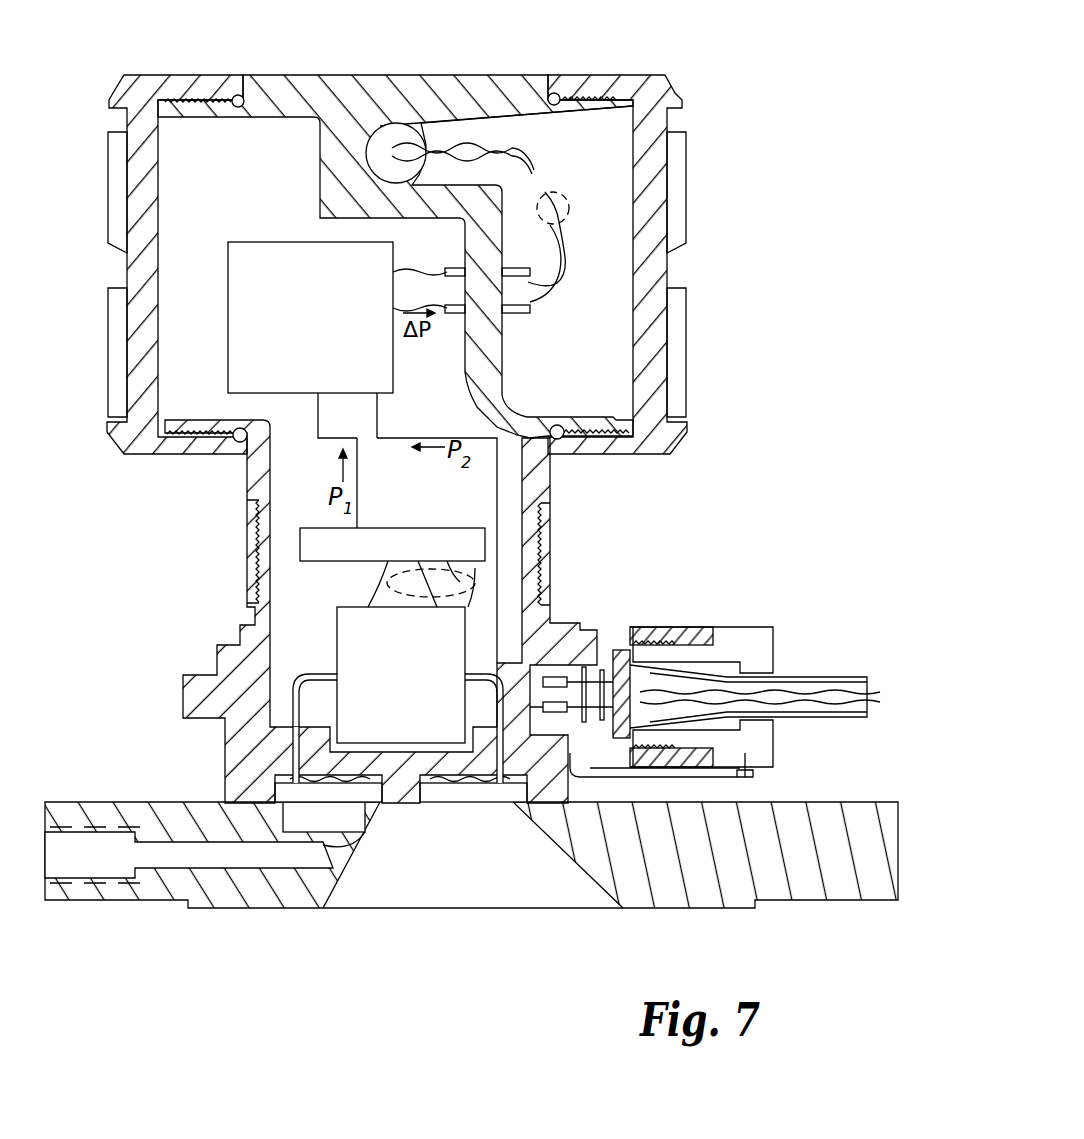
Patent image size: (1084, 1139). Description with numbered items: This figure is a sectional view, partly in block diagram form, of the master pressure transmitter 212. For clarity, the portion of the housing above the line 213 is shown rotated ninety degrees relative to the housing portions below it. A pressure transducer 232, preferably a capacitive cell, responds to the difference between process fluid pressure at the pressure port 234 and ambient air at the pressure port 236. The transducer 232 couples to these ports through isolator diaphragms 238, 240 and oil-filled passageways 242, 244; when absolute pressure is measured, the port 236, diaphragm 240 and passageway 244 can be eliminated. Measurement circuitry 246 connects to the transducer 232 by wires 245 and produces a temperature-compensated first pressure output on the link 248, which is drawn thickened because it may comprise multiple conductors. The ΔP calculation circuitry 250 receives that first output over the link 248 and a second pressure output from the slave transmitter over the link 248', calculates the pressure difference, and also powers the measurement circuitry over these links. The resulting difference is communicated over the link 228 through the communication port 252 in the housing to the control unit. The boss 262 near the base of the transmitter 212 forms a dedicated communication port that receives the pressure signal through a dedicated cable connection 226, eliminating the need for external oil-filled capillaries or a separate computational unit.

The master pressure transmitter 212 is at (706, 74).
The line 213 is at (245, 512).
The dedicated cable connection 226 is at (785, 677).
The link 228 is at (556, 192).
The pressure transducer 232 is at (420, 690).
The pressure port 234 is at (473, 880).
The pressure port 236 is at (62, 856).
The isolator diaphragm 238 is at (497, 803).
The isolator diaphragm 240 is at (346, 847).
The passageway 242 is at (548, 770).
The passageway 244 is at (293, 740).
The wires 245 is at (373, 584).
The measurement circuitry 246 is at (404, 561).
The link 248 is at (387, 483).
The link 248' is at (437, 550).
The ΔP calculation circuitry 250 is at (321, 319).
The communication port 252 is at (383, 140).
The boss 262 is at (635, 626).